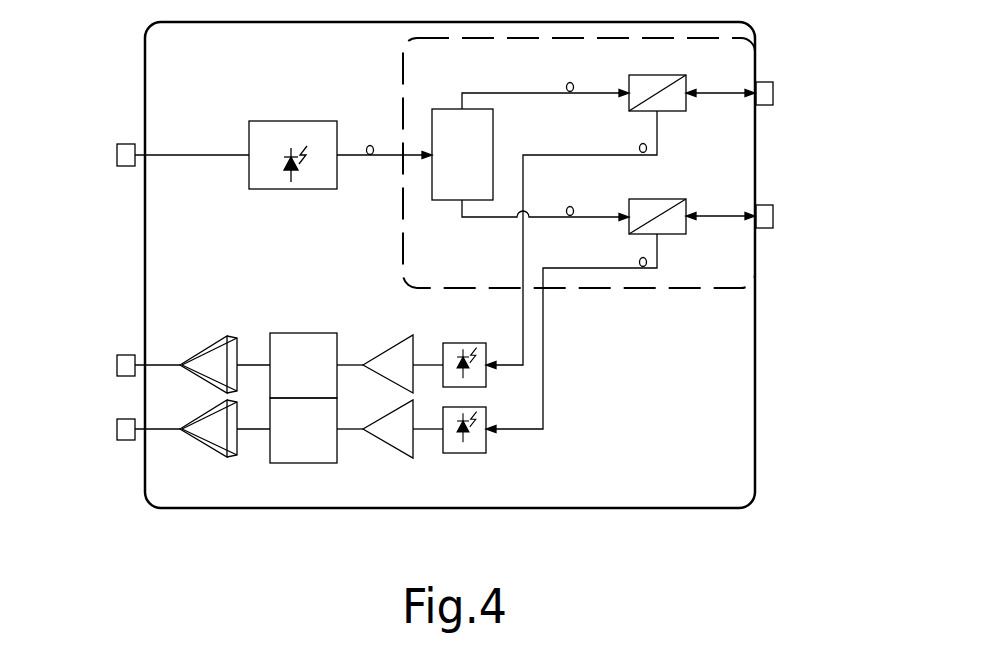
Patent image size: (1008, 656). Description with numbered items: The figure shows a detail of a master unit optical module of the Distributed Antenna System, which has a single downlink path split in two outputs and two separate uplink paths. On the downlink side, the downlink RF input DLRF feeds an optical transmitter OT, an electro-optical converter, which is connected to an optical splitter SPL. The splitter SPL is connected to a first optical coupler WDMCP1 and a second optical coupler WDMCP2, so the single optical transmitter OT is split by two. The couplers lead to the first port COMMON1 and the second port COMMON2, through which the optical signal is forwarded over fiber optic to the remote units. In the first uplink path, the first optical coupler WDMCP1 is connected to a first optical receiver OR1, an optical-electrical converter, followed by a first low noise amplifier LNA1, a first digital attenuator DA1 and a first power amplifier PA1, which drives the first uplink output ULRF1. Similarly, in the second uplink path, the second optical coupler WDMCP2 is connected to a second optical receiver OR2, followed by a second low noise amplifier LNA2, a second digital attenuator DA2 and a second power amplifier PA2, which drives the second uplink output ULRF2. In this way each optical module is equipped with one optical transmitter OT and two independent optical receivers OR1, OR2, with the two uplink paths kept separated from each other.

The downlink RF input DLRF is at (142, 155).
The optical transmitter OT is at (340, 136).
The optical splitter SPL is at (530, 152).
The first optical coupler WDMCP1 is at (620, 204).
The second optical coupler WDMCP2 is at (620, 299).
The first port COMMON1 is at (826, 94).
The second port COMMON2 is at (826, 217).
The first uplink output ULRF1 is at (104, 365).
The second uplink output ULRF2 is at (104, 429).
The first power amplifier PA1 is at (225, 346).
The second power amplifier PA2 is at (225, 449).
The first digital attenuator DA1 is at (316, 365).
The second digital attenuator DA2 is at (316, 430).
The first low noise amplifier LNA1 is at (403, 346).
The second low noise amplifier LNA2 is at (403, 449).
The first optical receiver OR1 is at (466, 347).
The second optical receiver OR2 is at (466, 448).